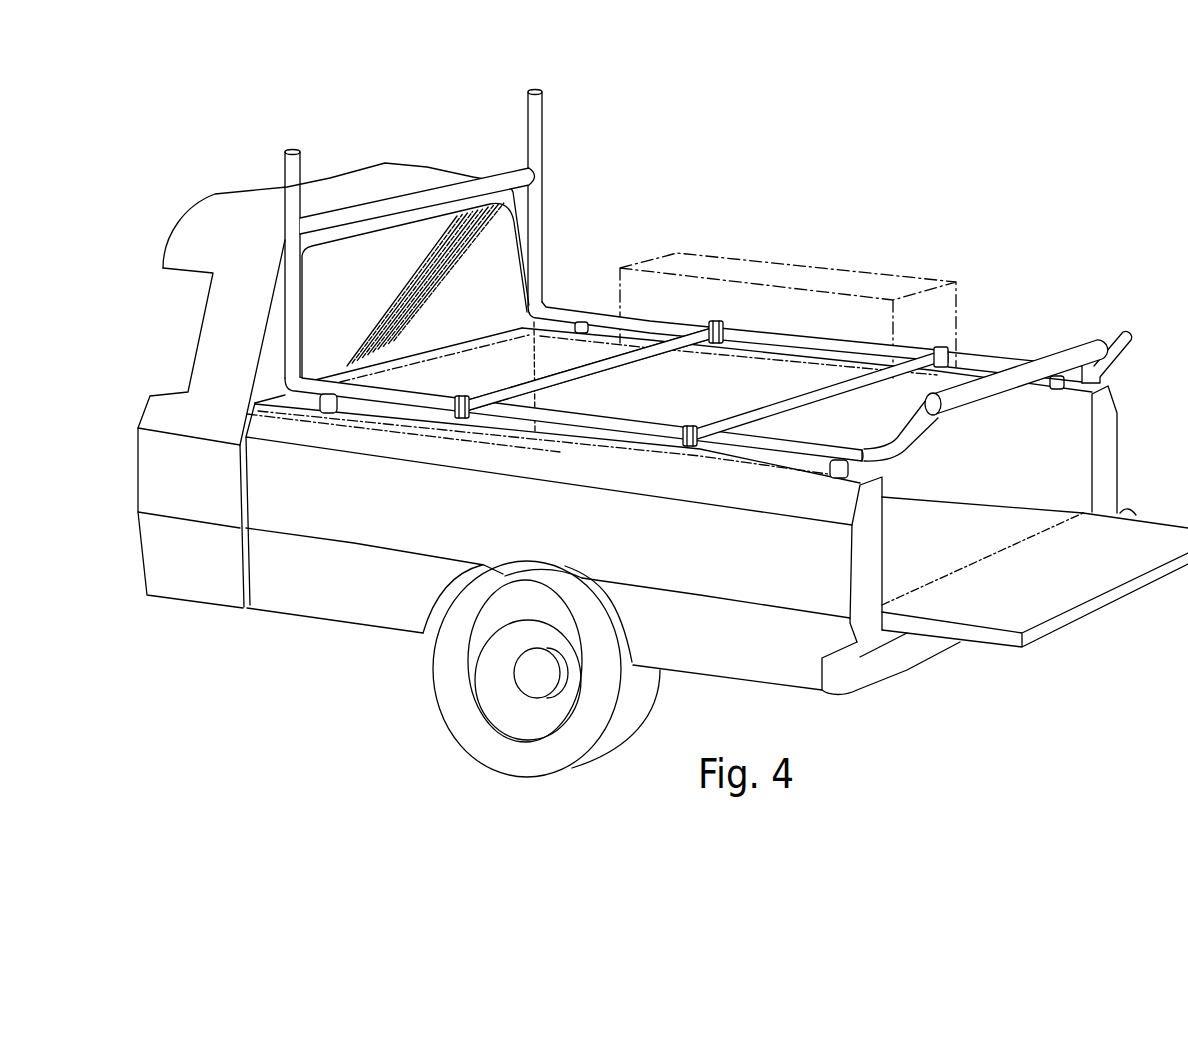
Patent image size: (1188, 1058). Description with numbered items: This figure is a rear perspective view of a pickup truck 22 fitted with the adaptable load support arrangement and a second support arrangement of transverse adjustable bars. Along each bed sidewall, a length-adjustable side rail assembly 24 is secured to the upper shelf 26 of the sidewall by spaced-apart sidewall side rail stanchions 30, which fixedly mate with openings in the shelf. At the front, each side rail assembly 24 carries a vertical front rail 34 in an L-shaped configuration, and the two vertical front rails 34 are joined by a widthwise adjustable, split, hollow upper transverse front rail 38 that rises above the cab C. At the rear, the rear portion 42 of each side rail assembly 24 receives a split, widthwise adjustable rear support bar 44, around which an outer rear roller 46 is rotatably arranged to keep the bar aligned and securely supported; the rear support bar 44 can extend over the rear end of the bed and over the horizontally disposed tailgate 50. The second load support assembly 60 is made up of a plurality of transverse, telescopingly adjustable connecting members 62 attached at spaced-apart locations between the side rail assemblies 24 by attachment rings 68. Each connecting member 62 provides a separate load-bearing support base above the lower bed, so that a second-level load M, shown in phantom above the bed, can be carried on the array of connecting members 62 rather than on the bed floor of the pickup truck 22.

The pickup truck 22 is at (352, 616).
The side rail assembly 24 is at (571, 310).
The upper shelf 26 is at (573, 437).
The sidewall side rail stanchion 30 is at (320, 409).
The vertical front rail 34 is at (287, 233).
The upper transverse front rail 38 is at (498, 177).
The rear portion 42 is at (842, 449).
The rear support bar 44 is at (1111, 335).
The outer rear roller 46 is at (1068, 352).
The tailgate 50 is at (1108, 594).
The second load support assembly 60 is at (639, 356).
The connecting member 62 is at (526, 383).
The attachment ring 68 is at (458, 414).
The cab C is at (240, 201).
The second level load M is at (876, 270).